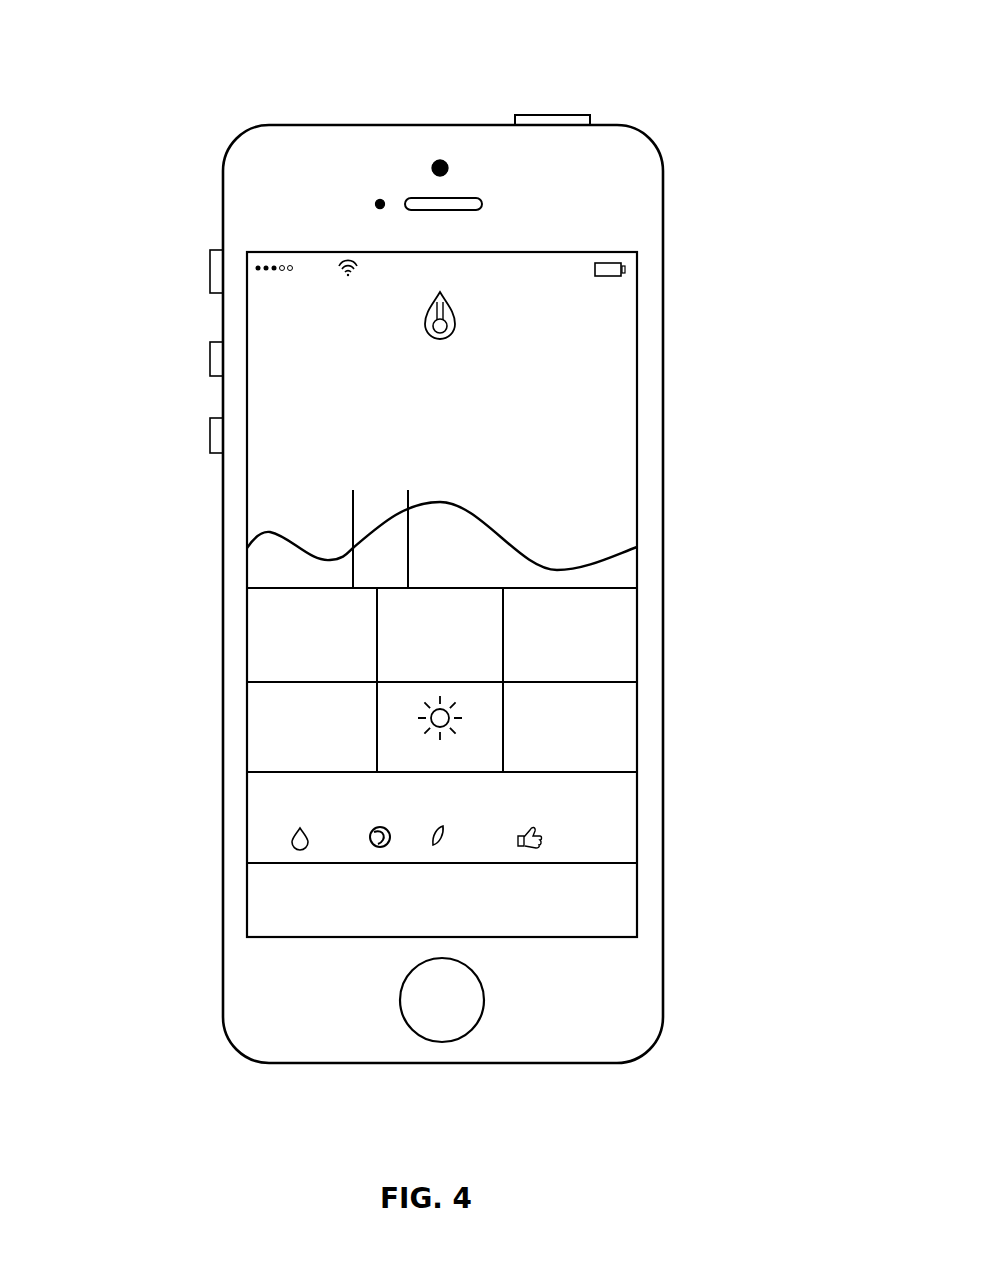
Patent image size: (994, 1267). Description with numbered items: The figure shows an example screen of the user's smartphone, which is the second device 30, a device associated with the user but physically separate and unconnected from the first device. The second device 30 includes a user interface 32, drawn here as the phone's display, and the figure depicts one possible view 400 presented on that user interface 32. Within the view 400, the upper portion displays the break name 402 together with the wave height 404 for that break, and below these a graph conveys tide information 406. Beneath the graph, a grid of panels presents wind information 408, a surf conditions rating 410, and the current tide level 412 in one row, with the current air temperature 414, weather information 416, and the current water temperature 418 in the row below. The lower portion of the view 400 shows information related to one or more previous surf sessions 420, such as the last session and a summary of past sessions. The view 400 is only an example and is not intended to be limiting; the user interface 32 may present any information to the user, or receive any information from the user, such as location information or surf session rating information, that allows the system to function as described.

The second device 30 is at (443, 125).
The user interface 32 is at (638, 370).
The view 400 is at (669, 140).
The break name 402 is at (366, 378).
The wave height 404 is at (370, 450).
The tide information 406 is at (270, 537).
The wind information 408 is at (270, 636).
The surf conditions rating 410 is at (458, 614).
The current tide level 412 is at (616, 633).
The current air temperature 414 is at (270, 714).
The weather information 416 is at (396, 753).
The current water temperature 418 is at (616, 726).
The information related to one or more previous surf sessions 420 is at (601, 810).